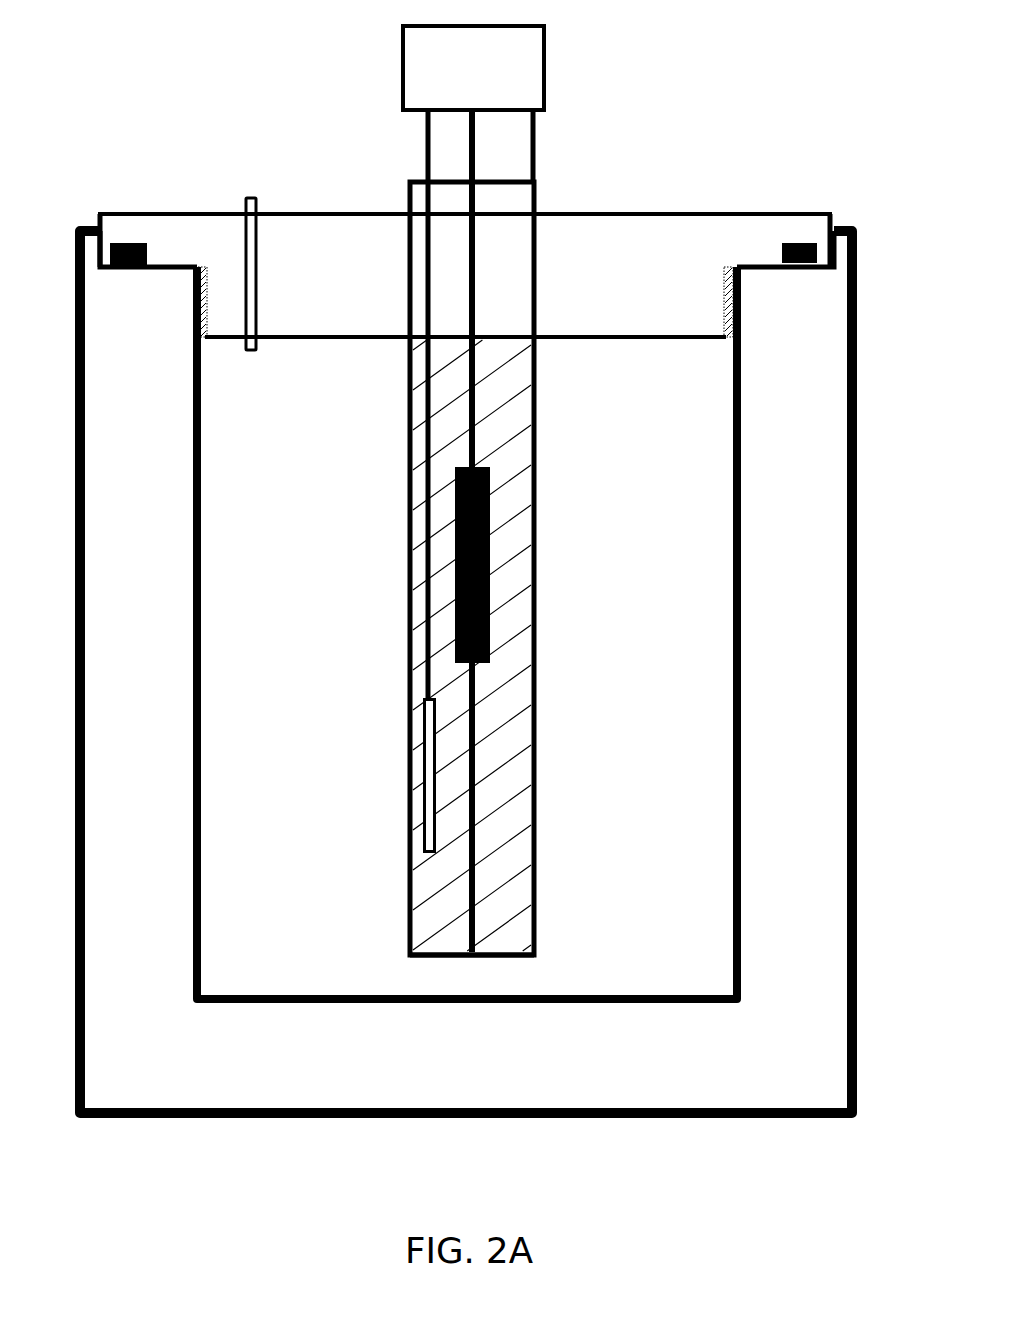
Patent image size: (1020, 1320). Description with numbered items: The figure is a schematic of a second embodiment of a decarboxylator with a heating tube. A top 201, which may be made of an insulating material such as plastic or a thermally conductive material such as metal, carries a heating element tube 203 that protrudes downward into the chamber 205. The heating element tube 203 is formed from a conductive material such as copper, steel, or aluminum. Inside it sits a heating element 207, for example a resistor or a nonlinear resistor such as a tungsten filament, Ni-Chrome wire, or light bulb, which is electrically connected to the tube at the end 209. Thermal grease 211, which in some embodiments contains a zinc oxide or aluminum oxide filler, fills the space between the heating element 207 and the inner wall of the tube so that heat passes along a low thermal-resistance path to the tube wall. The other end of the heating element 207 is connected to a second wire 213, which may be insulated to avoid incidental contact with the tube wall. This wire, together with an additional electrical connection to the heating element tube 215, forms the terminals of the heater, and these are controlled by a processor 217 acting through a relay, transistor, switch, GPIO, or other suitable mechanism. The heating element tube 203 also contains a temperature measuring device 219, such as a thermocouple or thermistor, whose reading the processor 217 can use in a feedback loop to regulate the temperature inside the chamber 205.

The top 201 is at (350, 292).
The heating element tube 203 is at (537, 815).
The chamber 205 is at (355, 694).
The heating element 207 is at (492, 593).
The end 209 is at (470, 952).
The thermal grease 211 is at (503, 434).
The second wire 213 is at (473, 248).
The additional electrical connection to the heating element tube 215 is at (533, 137).
The processor 217 is at (403, 87).
The temperature measuring device 219 is at (424, 795).